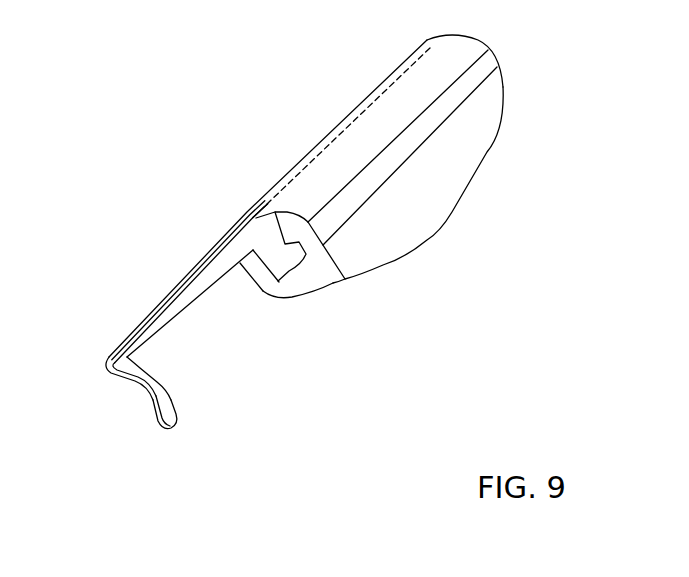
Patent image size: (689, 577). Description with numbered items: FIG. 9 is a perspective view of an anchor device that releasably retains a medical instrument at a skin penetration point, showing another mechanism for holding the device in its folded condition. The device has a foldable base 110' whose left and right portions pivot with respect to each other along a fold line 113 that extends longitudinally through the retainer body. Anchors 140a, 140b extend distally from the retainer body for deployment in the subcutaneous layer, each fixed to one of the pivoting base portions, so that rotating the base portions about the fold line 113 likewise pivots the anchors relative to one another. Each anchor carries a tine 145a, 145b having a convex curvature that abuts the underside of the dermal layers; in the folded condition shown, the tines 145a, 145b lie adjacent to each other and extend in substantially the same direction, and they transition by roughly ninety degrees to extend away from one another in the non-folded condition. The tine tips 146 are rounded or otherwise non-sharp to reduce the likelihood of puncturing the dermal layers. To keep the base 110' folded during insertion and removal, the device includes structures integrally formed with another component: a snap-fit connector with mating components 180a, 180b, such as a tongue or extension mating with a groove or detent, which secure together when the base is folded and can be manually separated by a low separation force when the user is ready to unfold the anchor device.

The base 110' is at (332, 196).
The fold line 113 is at (332, 126).
The anchor 140a is at (183, 305).
The anchor 140b is at (177, 274).
The tine 145a is at (165, 402).
The tine 145b is at (140, 387).
The tine tip 146 is at (152, 426).
The snap-fit connector component 180a is at (312, 278).
The snap-fit connector component 180b is at (273, 282).